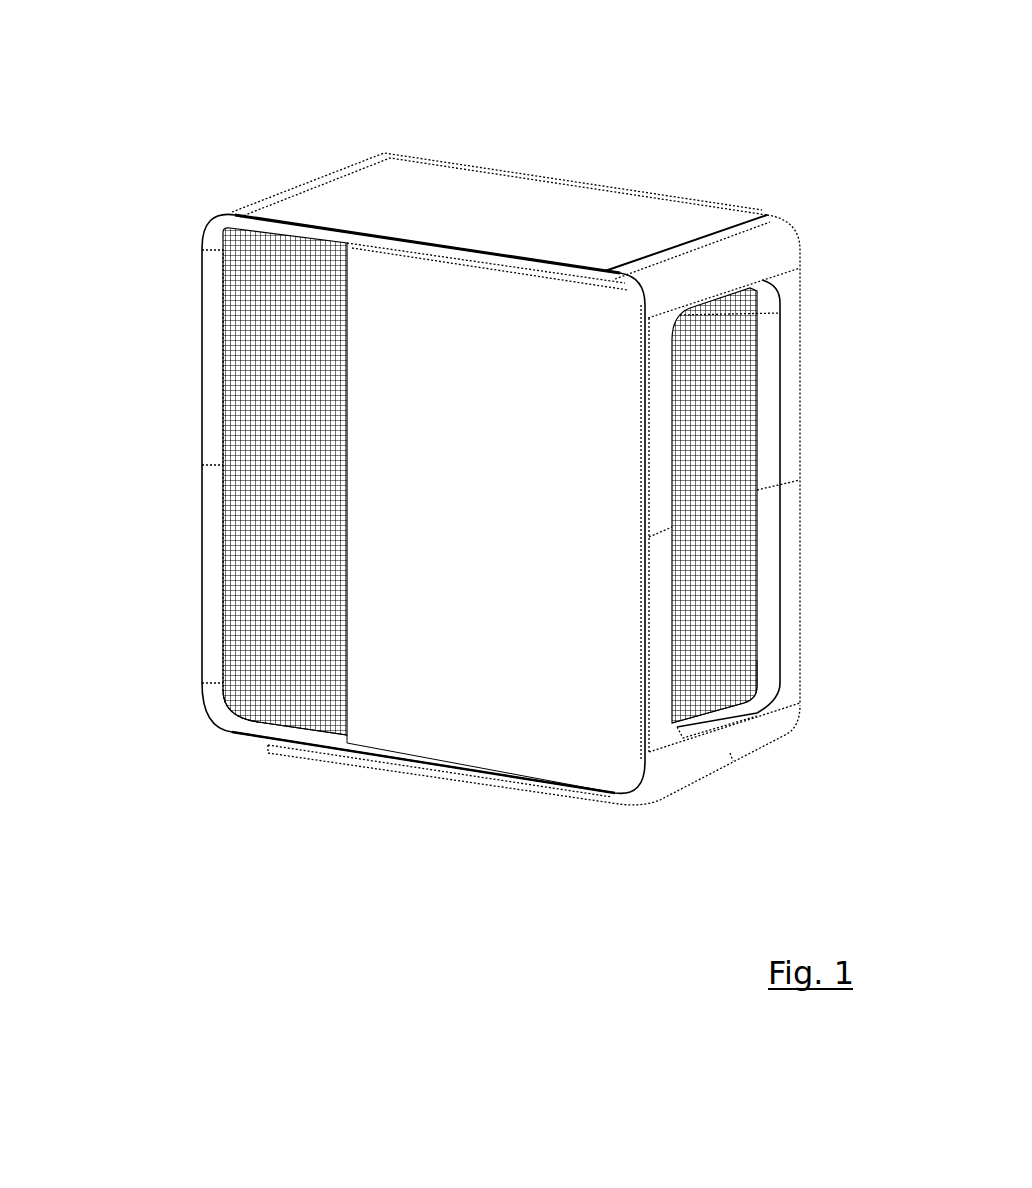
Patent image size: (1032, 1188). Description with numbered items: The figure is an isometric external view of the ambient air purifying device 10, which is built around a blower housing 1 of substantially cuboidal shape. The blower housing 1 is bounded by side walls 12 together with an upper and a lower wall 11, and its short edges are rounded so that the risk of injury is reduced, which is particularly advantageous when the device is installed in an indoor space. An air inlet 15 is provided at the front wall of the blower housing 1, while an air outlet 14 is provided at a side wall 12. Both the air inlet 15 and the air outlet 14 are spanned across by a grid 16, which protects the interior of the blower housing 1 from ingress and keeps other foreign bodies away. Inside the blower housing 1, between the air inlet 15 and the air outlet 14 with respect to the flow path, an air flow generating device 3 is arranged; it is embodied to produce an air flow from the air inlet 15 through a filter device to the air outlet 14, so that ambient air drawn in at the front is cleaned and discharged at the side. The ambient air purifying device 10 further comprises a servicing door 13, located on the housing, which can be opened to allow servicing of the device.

The ambient air purifying device 10 is at (694, 110).
The blower housing 1 is at (719, 208).
The upper and lower wall 11 is at (499, 167).
The side wall 12 is at (764, 503).
The servicing door 13 is at (534, 787).
The air outlet 14 is at (441, 756).
The air inlet 15 is at (778, 505).
The grid 16 is at (548, 679).
The air flow generating device 3 is at (205, 481).